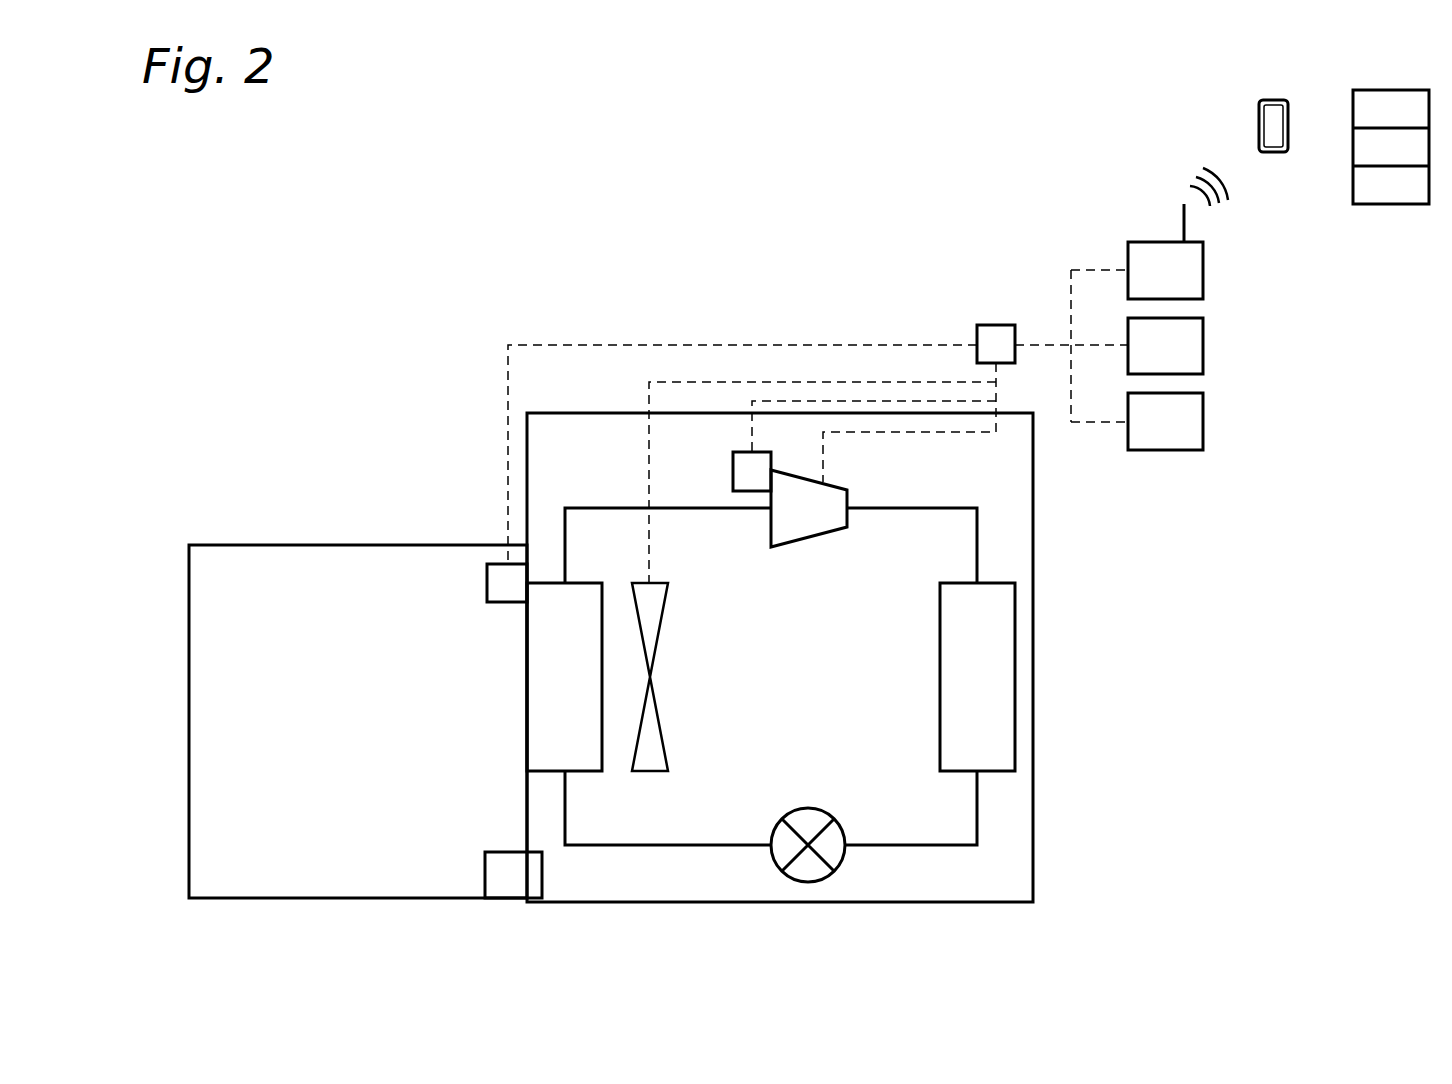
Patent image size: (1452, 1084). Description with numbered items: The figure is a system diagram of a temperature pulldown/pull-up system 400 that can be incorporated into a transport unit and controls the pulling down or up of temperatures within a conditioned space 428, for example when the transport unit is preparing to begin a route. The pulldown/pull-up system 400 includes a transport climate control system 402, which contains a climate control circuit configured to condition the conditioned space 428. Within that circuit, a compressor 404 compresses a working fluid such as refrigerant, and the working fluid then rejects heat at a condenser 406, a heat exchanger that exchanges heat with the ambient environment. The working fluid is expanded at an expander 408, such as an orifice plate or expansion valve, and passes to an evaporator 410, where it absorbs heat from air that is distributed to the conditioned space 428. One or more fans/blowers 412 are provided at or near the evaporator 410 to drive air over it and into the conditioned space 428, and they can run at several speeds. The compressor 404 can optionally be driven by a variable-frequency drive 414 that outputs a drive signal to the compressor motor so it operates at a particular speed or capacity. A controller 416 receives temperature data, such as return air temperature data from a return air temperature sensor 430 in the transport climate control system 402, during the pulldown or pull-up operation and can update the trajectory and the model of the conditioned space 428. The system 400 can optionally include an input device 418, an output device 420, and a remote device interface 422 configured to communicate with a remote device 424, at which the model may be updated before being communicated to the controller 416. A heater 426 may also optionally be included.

The pulldown/pull-up system 400 is at (497, 213).
The transport climate control system 402 is at (1033, 852).
The compressor 404 is at (849, 489).
The condenser 406 is at (996, 582).
The expander 408 is at (820, 883).
The evaporator 410 is at (585, 773).
The fans/blowers 412 is at (663, 745).
The variable-frequency drive 414 is at (750, 452).
The controller 416 is at (995, 325).
The input device 418 is at (1203, 440).
The output device 420 is at (1203, 365).
The remote device interface 422 is at (1203, 290).
The remote device 424 is at (1272, 100).
The heater 426 is at (563, 874).
The conditioned space 428 is at (257, 565).
The return air temperature sensor 430 is at (488, 565).